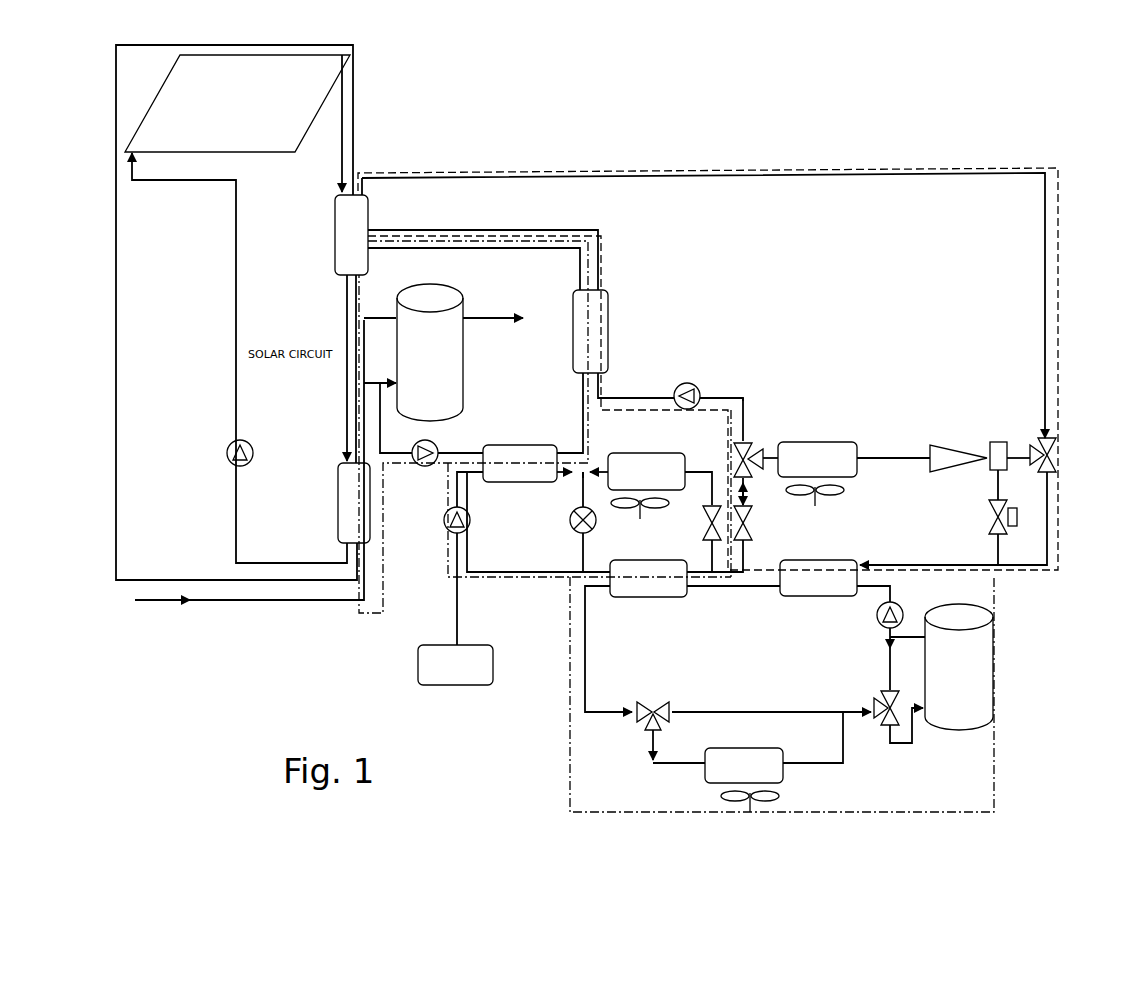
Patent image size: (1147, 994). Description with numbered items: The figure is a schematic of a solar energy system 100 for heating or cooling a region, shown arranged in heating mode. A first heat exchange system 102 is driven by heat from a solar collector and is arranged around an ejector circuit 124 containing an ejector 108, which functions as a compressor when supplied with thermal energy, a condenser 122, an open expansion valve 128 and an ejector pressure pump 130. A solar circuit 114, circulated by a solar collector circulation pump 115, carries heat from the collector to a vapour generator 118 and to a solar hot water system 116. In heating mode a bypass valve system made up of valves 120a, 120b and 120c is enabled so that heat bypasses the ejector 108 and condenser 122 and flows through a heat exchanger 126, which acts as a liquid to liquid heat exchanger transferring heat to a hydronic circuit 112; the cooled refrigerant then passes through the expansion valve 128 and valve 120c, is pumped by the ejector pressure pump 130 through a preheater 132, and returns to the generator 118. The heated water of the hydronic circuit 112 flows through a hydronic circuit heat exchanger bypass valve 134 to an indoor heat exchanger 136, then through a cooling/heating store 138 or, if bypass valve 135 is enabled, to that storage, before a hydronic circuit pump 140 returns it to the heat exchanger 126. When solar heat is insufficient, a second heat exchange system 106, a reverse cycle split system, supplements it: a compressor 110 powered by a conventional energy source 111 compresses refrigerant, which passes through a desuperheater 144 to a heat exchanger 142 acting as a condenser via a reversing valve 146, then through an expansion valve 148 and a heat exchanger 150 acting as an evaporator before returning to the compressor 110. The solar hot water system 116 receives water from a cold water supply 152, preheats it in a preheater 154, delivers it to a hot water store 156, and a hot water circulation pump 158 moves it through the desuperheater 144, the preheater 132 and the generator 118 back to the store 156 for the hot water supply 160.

The solar energy system 100 is at (1045, 105).
The first heat exchange system 102 is at (822, 168).
The second heat exchange system 106 is at (488, 580).
The ejector 108 is at (958, 468).
The compressor 110 is at (448, 533).
The conventional source of energy 111 is at (452, 683).
The hydronic circuit 112 is at (996, 760).
The solar circuit 114 is at (355, 92).
The solar collector circulation pump 115 is at (249, 448).
The solar hot water system 116 is at (588, 235).
The vapour generator 118 is at (335, 238).
The bypass valve 120a is at (1062, 448).
The bypass valve 120b is at (1012, 500).
The bypass valve 120c is at (750, 434).
The condenser 122 is at (855, 445).
The ejector circuit 124 is at (940, 392).
The heat exchanger 126 is at (830, 560).
The expansion valve 128 is at (760, 527).
The ejector pressure pump 130 is at (700, 382).
The preheater 132 is at (608, 348).
The hydronic circuit heat exchanger bypass valve 134 is at (640, 724).
The bypass valve 135 is at (878, 696).
The heat exchanger 136 is at (783, 775).
The cooling/heating store 138 is at (994, 680).
The hydronic circuit pump 140 is at (905, 604).
The heat exchanger 142 is at (687, 596).
The desuperheater 144 is at (483, 452).
The reversing valve 146 is at (570, 540).
The expansion valve 148 is at (702, 530).
The heat exchanger 150 is at (678, 452).
The cold water supply 152 is at (180, 648).
The preheater 154 is at (338, 493).
The hot water store 156 is at (445, 284).
The hot water circulation pump 158 is at (420, 466).
The hot water supply 160 is at (512, 368).